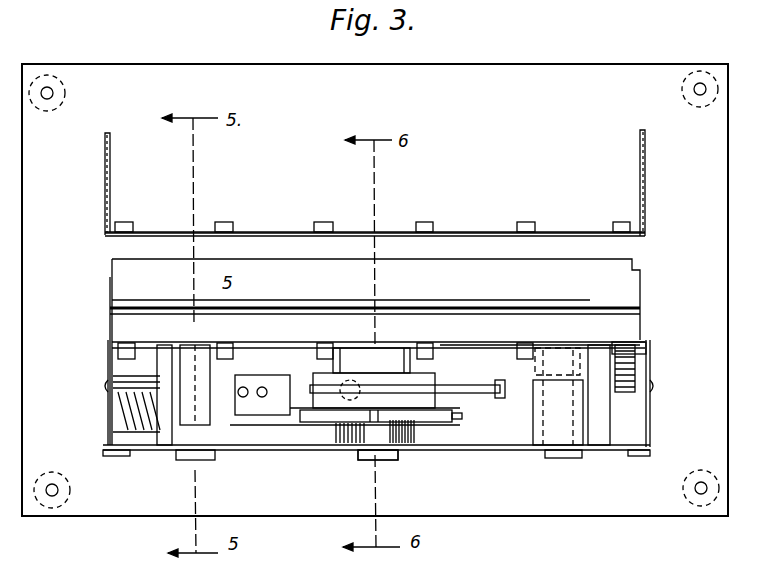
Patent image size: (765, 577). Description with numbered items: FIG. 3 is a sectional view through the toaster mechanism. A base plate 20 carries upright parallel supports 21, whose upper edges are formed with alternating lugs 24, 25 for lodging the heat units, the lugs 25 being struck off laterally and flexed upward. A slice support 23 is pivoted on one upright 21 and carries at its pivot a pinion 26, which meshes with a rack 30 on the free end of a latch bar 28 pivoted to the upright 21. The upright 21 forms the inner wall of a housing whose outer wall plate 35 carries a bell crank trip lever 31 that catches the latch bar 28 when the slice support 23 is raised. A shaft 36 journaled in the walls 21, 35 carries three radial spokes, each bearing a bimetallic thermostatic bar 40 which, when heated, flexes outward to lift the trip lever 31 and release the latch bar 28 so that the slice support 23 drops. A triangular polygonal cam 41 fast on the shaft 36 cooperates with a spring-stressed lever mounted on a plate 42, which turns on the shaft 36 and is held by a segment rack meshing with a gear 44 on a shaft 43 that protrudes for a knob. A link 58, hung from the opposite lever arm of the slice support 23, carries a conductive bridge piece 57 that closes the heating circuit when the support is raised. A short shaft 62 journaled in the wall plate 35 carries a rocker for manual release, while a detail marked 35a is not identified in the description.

The base plate 20 is at (292, 173).
The parallel supports 21 is at (105, 185).
The slice support 23 is at (426, 289).
The lugs 24 is at (292, 231).
The lugs 25 is at (232, 228).
The pinion 26 is at (632, 396).
The latch bar 28 is at (460, 345).
The rack 30 is at (628, 350).
The bell crank trip lever 31 is at (497, 385).
The outer wall plate 35 is at (500, 448).
The carriage foot 35a is at (430, 452).
The shaft 36 is at (385, 455).
The thermostatic bar 40 is at (288, 385).
The polygonal cam 41 is at (437, 416).
The plate 42 is at (322, 430).
The shaft 43 is at (210, 460).
The gear 44 is at (194, 458).
The conductive bridge piece 57 is at (170, 395).
The link 58 is at (150, 420).
The short shaft 62 is at (582, 452).